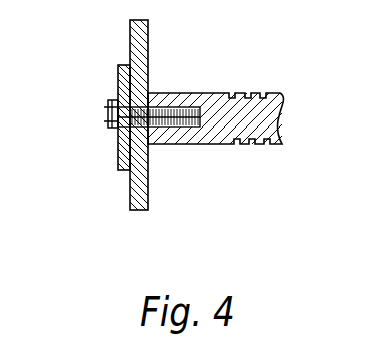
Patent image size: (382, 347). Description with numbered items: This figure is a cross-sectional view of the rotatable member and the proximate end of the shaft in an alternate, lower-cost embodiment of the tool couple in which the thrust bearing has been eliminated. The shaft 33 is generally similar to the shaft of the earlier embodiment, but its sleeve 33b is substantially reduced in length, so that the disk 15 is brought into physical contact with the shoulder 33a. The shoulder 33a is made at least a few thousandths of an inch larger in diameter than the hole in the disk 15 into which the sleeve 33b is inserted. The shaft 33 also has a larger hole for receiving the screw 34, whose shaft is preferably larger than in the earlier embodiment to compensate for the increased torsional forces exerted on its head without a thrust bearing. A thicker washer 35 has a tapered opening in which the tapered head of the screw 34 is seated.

The disk 15 is at (148, 209).
The shaft 33 is at (257, 140).
The shoulder 33a is at (150, 147).
The sleeve 33b is at (154, 96).
The screw 34 is at (118, 102).
The washer 35 is at (118, 158).